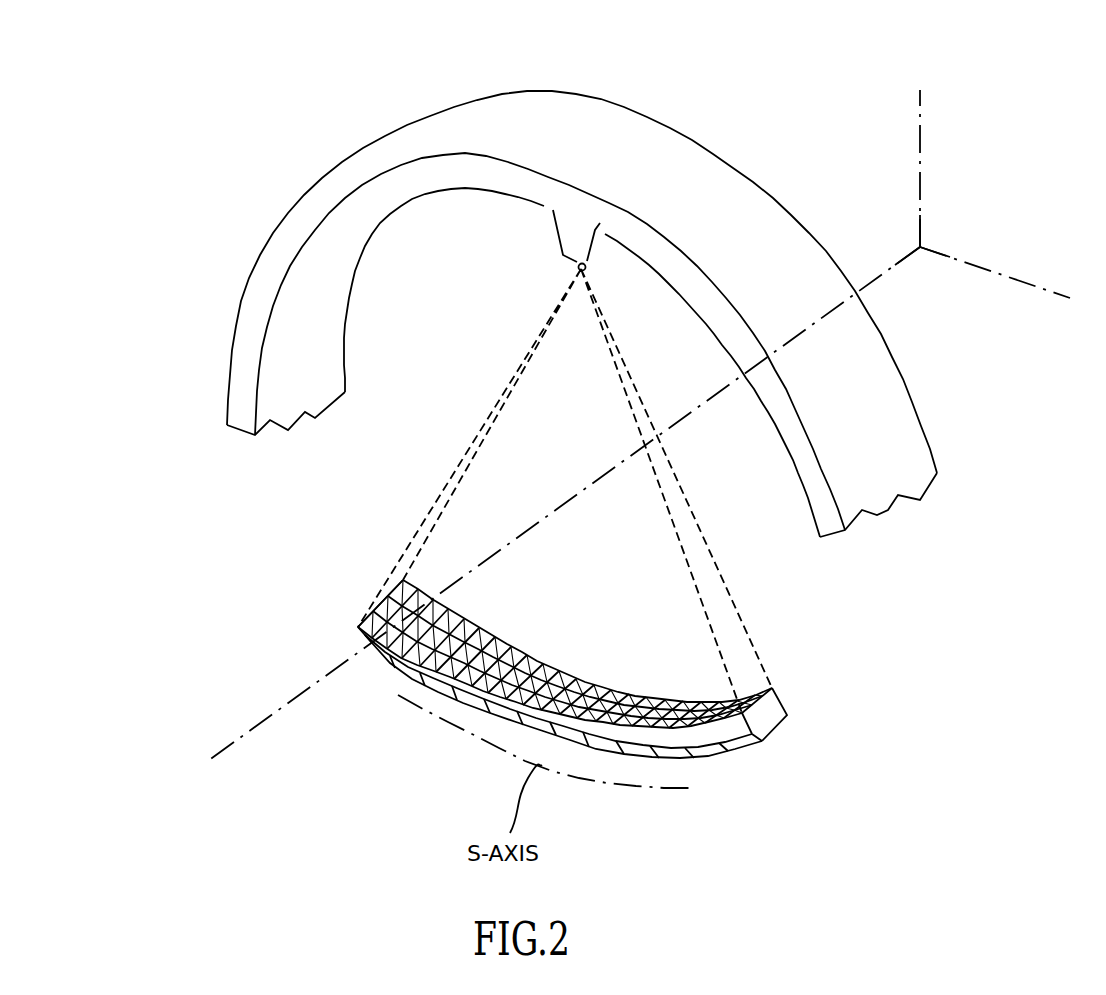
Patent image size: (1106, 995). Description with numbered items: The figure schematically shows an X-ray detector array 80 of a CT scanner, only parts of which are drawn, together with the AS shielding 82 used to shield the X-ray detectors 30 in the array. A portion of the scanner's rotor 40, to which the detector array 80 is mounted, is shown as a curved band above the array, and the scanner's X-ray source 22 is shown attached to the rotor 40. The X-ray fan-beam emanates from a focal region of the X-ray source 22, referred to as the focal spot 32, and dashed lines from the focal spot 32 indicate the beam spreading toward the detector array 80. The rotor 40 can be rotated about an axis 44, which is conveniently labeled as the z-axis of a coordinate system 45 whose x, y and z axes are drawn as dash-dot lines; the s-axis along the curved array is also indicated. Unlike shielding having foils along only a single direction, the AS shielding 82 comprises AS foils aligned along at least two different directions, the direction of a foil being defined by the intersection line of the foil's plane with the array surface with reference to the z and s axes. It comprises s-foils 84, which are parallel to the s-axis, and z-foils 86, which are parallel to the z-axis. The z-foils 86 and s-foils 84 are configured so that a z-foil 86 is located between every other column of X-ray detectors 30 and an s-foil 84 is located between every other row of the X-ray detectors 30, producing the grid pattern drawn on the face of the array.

The X-ray source 22 is at (577, 233).
The focal spot 32 is at (578, 267).
The rotor 40 is at (250, 343).
The axis 44 is at (273, 712).
The coordinate system 45 is at (994, 186).
The X-ray detector array 80 is at (637, 704).
The AS shielding 82 is at (637, 654).
The s-foils 84 is at (510, 650).
The z-foils 86 is at (623, 694).
The X-ray detectors 30 is at (765, 740).